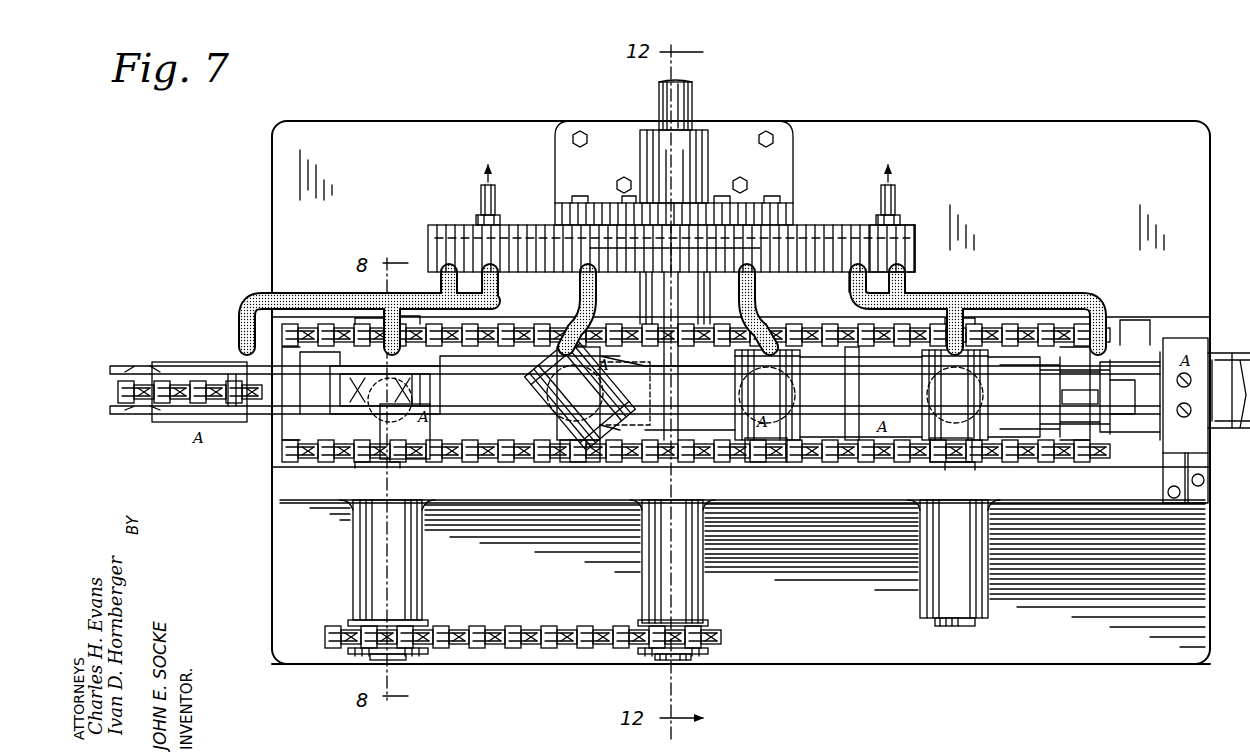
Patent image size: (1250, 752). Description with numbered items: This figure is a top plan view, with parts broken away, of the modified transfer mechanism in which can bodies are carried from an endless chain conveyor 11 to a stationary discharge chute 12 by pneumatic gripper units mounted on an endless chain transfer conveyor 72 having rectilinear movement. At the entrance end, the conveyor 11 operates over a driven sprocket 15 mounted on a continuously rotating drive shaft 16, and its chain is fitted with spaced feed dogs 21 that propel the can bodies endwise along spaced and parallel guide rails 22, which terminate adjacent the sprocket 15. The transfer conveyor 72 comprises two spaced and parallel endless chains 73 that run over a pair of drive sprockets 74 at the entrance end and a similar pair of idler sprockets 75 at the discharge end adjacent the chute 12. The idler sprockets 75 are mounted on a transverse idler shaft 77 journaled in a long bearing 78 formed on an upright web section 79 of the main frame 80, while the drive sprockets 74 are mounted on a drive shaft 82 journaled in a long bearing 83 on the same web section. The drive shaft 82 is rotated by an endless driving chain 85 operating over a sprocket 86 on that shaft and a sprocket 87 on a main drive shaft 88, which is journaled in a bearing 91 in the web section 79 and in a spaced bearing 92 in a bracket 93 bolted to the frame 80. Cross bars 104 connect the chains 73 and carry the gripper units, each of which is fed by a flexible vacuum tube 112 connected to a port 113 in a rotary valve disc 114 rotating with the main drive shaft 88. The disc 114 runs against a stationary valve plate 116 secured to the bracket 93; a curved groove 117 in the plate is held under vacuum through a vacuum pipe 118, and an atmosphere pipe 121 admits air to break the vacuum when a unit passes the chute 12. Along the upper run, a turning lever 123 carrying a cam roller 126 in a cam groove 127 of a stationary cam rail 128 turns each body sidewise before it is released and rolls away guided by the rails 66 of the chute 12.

The conveyor 11 is at (192, 381).
The stationary discharge chute 12 is at (1178, 336).
The driven sprocket 15 is at (446, 398).
The drive shaft 16 is at (396, 410).
The feed dogs 21 is at (228, 383).
The guide rails 22 is at (147, 410).
The rails 66 is at (1133, 362).
The chain transfer conveyor 72 is at (830, 469).
The endless chains 73 is at (868, 437).
The drive sprockets 74 is at (298, 328).
The idler sprockets 75 is at (1042, 333).
The idler shaft 77 is at (948, 628).
The long bearing 78 is at (925, 608).
The upright web section 79 is at (458, 502).
The frame 80 is at (852, 660).
The drive shaft 82 is at (392, 660).
The long bearing 83 is at (368, 572).
The endless driving chain 85 is at (494, 630).
The sprocket 86 is at (347, 628).
The sprocket 87 is at (648, 630).
The main drive shaft 88 is at (683, 96).
The bearing 91 is at (693, 597).
The bearing 92 is at (700, 161).
The bracket 93 is at (790, 153).
The cross bar 104 is at (583, 462).
The flexible vacuum tube 112 is at (254, 298).
The port 113 is at (604, 262).
The rotary valve disc 114 is at (800, 274).
The stationary valve plate 116 is at (812, 240).
The curved groove 117 is at (520, 240).
The vacuum pipe 118 is at (484, 199).
The atmosphere pipe 121 is at (897, 193).
The turning lever 123 is at (742, 401).
The cam roller 126 is at (548, 400).
The cam groove 127 is at (652, 378).
The stationary cam rail 128 is at (626, 428).